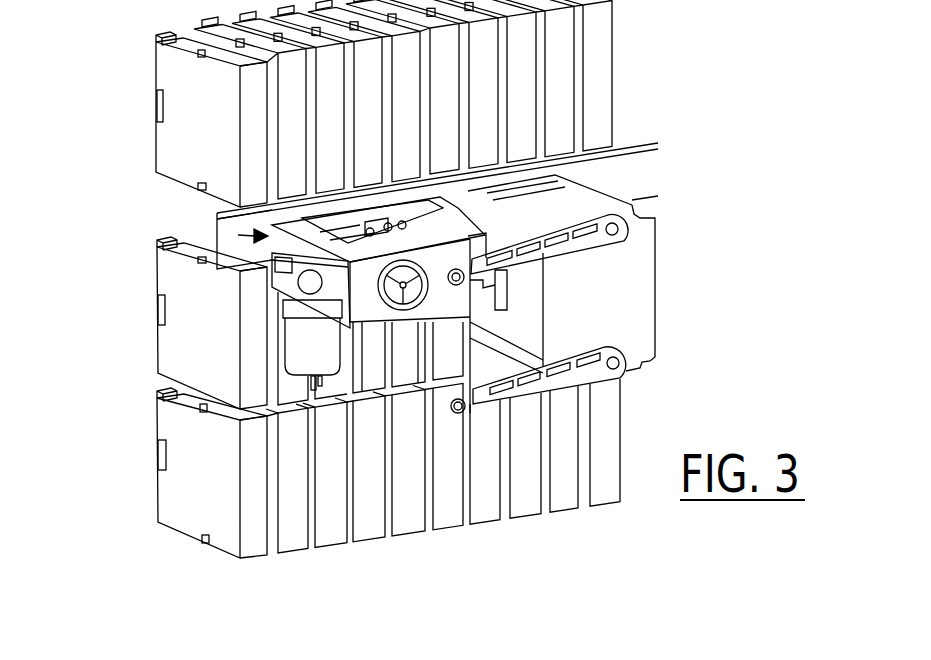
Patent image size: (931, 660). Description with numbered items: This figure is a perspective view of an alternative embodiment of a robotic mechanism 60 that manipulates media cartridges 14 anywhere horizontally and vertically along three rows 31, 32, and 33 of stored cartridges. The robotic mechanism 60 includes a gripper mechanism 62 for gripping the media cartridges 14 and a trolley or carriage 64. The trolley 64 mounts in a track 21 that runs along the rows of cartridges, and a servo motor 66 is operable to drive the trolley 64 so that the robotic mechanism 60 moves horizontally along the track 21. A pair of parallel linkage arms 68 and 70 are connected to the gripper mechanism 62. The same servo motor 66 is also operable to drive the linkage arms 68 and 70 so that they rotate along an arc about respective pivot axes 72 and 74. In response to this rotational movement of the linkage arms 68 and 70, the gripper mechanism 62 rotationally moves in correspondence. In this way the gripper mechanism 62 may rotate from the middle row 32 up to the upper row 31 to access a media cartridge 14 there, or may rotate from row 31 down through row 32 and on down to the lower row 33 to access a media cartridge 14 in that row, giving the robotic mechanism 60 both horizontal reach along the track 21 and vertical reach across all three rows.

The media cartridge 14 is at (613, 81).
The track 21 is at (622, 188).
The row 31 is at (153, 105).
The row 32 is at (153, 312).
The row 33 is at (153, 455).
The robotic mechanism 60 is at (452, 358).
The gripper mechanism 62 is at (633, 308).
The trolley 64 is at (207, 227).
The servo motor 66 is at (384, 304).
The linkage arm 68 is at (613, 236).
The linkage arm 70 is at (600, 397).
The pivot axis 72 is at (458, 286).
The pivot axis 74 is at (459, 414).